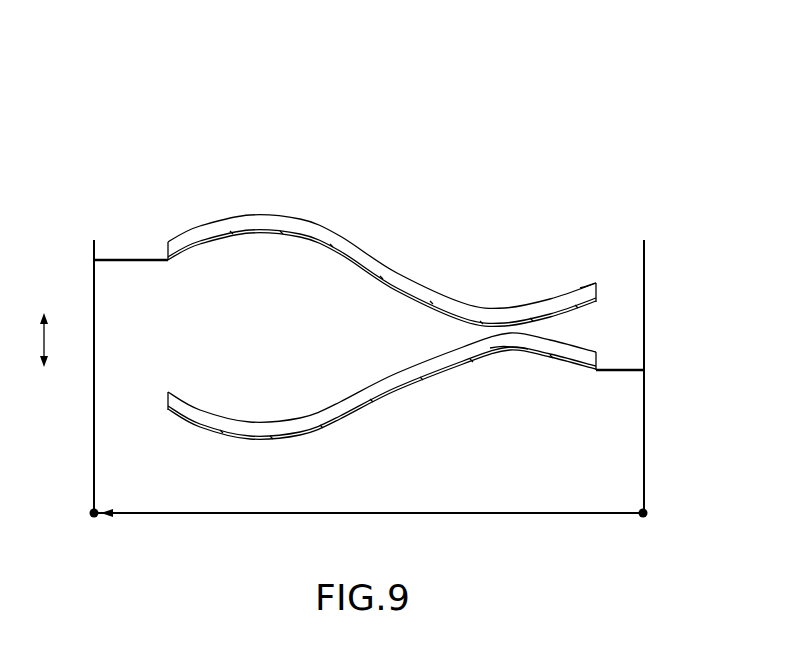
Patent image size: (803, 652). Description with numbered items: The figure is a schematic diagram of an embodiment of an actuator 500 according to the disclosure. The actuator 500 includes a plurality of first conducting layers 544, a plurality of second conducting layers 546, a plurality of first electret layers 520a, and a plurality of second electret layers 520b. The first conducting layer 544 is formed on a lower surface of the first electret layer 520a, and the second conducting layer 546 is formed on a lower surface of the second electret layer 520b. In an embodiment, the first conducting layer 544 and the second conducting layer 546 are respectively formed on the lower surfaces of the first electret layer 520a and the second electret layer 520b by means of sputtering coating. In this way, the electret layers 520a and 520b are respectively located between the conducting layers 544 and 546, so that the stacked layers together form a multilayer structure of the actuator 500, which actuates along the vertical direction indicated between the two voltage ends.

The actuator 500 is at (203, 116).
The first electret layer 520a is at (535, 312).
The second electret layer 520b is at (253, 430).
The first conducting layer 544 is at (597, 299).
The second conducting layer 546 is at (514, 346).